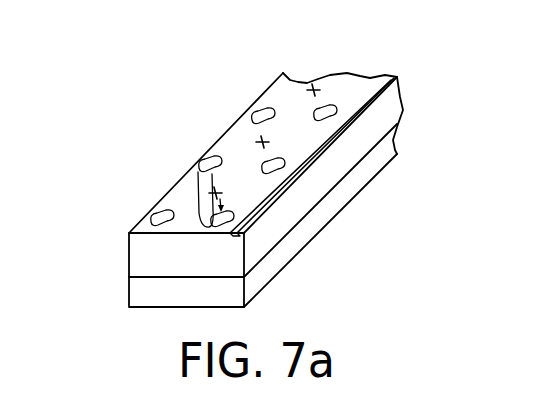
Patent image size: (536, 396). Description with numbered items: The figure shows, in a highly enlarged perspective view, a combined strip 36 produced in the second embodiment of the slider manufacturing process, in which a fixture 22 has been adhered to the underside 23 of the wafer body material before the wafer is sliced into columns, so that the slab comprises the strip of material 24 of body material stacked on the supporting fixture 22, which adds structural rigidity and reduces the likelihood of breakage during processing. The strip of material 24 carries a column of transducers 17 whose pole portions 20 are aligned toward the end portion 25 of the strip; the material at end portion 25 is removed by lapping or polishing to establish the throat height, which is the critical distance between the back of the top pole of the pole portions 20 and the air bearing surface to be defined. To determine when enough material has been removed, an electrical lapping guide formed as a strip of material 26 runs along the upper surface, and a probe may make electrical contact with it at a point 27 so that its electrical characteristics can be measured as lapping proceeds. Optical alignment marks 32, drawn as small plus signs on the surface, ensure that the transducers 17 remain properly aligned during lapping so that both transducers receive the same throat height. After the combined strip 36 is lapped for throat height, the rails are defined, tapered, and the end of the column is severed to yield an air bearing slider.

The transducers 17 is at (212, 147).
The pole portions 20 is at (191, 168).
The fixture 22 is at (385, 155).
The underside 23 is at (290, 240).
The strip of material 24 is at (381, 113).
The end portion 25 is at (162, 252).
The strip of material (electrical lapping guide) 26 is at (338, 142).
The point 27 is at (363, 87).
The alignment marks 32 is at (308, 91).
The combined strip 36 is at (365, 232).